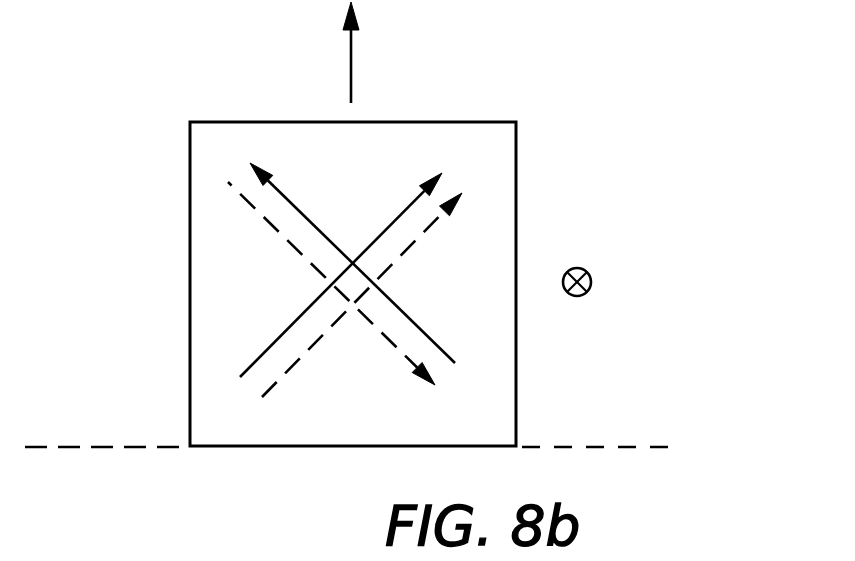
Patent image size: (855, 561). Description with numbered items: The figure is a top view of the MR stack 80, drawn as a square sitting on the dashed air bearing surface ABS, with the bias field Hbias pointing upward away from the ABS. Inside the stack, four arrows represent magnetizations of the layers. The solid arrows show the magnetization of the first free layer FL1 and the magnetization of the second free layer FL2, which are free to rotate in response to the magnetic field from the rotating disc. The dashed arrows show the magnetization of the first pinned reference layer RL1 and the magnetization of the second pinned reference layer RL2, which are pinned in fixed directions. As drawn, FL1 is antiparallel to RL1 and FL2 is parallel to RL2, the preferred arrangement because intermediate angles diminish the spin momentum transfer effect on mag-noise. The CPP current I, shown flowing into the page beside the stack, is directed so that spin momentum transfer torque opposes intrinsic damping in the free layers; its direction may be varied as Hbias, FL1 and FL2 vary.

The MR stack 80 is at (596, 134).
The magnetization of first free layer FL1 is at (352, 249).
The magnetization of second free layer FL2 is at (345, 255).
The magnetization of first pinned reference layer RL1 is at (331, 302).
The magnetization of second pinned reference layer RL2 is at (384, 295).
The bias field Hbias is at (390, 52).
The CPP current I is at (624, 273).
The air bearing surface ABS is at (380, 444).